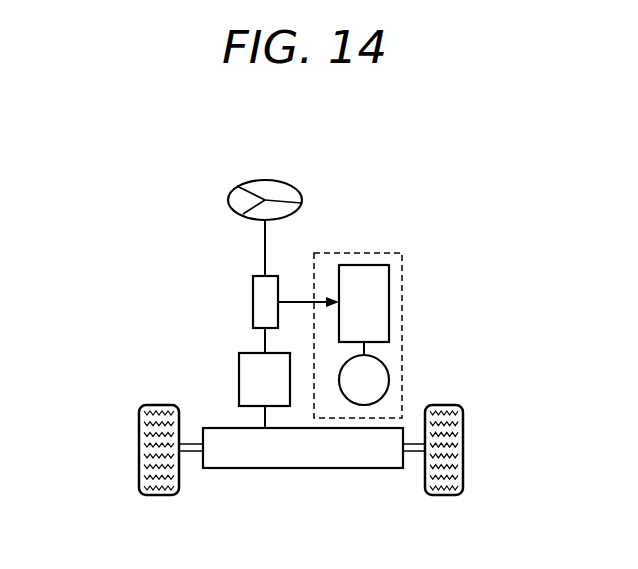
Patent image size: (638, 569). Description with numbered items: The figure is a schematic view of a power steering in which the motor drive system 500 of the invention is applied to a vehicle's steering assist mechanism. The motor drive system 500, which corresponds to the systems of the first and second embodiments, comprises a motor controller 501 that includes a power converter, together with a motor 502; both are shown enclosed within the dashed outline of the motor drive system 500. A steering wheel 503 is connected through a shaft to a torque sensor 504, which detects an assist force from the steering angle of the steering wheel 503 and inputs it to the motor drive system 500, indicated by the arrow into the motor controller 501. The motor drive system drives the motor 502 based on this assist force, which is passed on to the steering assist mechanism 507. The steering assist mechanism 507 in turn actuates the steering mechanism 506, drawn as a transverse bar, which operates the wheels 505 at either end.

The motor drive system 500 is at (380, 252).
The motor controller 501 is at (389, 293).
The motor 502 is at (389, 372).
The steering wheel 503 is at (265, 180).
The torque sensor 504 is at (253, 285).
The wheels 505 is at (463, 427).
The steering mechanism 506 is at (310, 468).
The steering assist mechanism 507 is at (239, 372).